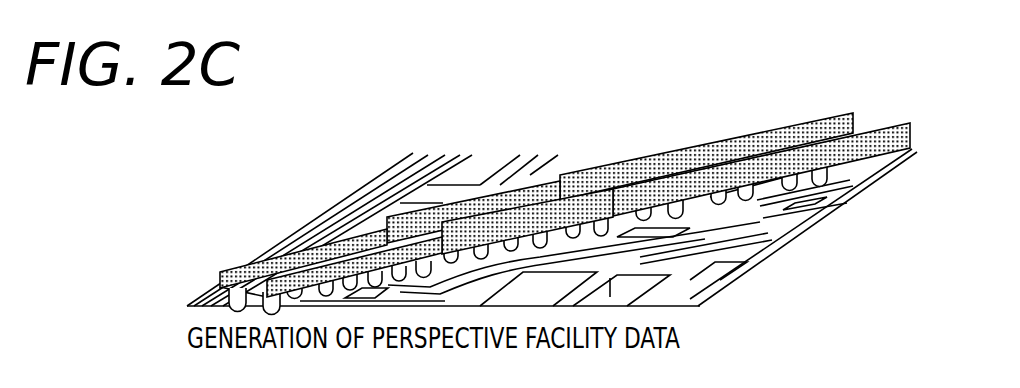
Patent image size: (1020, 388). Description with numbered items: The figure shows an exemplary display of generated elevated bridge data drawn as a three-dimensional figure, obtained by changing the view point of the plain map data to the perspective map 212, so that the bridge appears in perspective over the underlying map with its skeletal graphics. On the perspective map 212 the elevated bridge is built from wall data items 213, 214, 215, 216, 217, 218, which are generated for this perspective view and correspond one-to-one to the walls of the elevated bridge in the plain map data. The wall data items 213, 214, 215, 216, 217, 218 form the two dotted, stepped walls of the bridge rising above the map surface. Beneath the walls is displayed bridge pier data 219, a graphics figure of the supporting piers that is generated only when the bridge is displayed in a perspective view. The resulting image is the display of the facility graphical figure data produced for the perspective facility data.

The perspective map 212 is at (763, 233).
The wall data item 213 is at (893, 127).
The wall data item 214 is at (795, 137).
The wall data item 215 is at (587, 200).
The wall data item 216 is at (500, 200).
The wall data item 217 is at (347, 263).
The wall data item 218 is at (267, 257).
The bridge pier data 219 is at (688, 216).